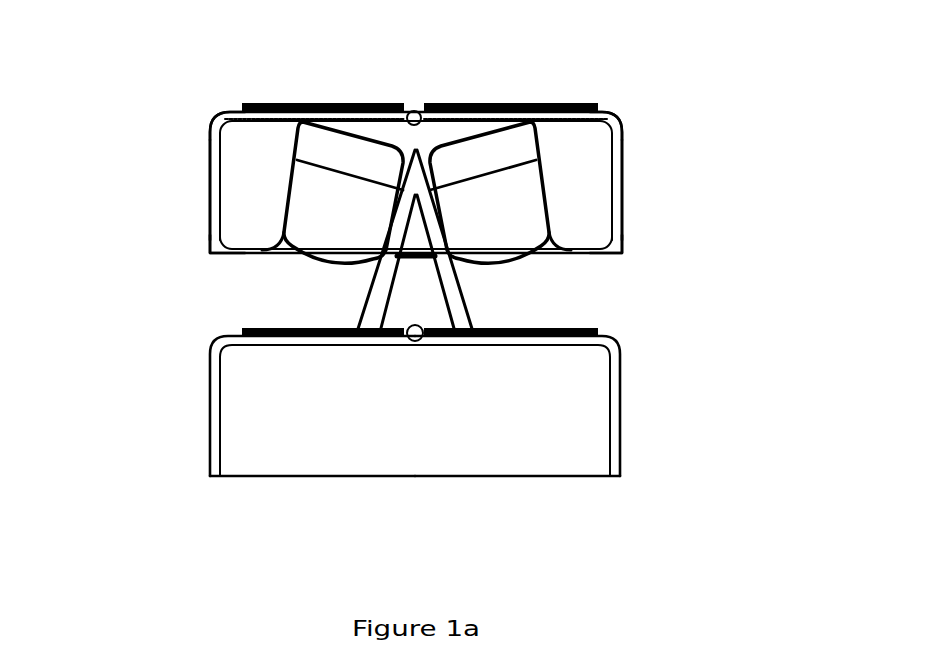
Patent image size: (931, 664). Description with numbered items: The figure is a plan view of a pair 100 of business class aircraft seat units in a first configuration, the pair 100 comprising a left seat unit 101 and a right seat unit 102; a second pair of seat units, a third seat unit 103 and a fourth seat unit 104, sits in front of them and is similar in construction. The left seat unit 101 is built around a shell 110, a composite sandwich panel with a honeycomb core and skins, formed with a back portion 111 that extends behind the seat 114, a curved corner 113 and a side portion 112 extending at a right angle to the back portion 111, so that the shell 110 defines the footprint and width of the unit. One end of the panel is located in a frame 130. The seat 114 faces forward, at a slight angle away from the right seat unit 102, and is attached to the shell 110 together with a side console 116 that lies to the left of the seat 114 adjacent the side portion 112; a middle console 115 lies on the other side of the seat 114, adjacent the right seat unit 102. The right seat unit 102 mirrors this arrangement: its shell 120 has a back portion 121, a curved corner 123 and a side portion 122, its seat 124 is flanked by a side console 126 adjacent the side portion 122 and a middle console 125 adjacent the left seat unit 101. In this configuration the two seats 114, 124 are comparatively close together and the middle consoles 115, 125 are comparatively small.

The pair of business class aircraft seat units 100 is at (428, 238).
The left seat unit 101 is at (413, 166).
The right seat unit 102 is at (524, 88).
The third seat unit 103 is at (238, 403).
The fourth seat unit 104 is at (586, 420).
The shell 110 is at (210, 183).
The back portion 111 is at (306, 114).
The side portion 112 is at (210, 220).
The curved corner 113 is at (208, 117).
The seat 114 is at (356, 221).
The middle console 115 is at (392, 298).
The side console 116 is at (268, 193).
The shell 120 is at (622, 178).
The back portion 121 is at (480, 112).
The side portion 122 is at (622, 215).
The curved corner 123 is at (617, 122).
The seat 124 is at (518, 228).
The middle console 125 is at (432, 297).
The side console 126 is at (600, 186).
The frame 130 is at (413, 112).